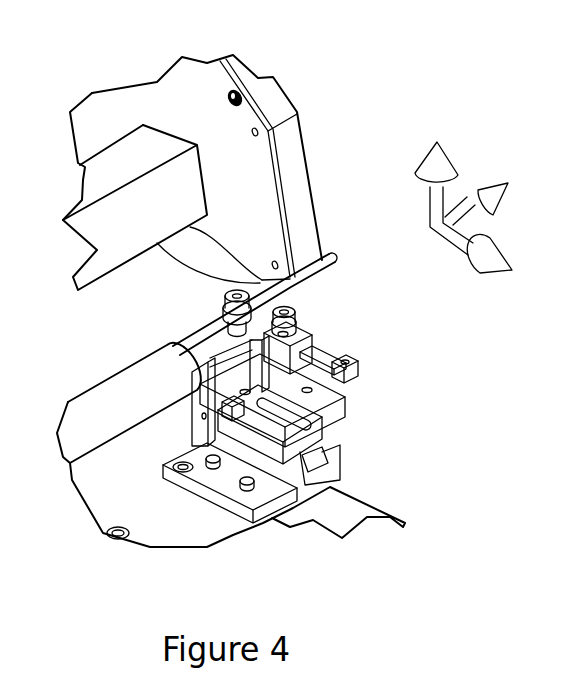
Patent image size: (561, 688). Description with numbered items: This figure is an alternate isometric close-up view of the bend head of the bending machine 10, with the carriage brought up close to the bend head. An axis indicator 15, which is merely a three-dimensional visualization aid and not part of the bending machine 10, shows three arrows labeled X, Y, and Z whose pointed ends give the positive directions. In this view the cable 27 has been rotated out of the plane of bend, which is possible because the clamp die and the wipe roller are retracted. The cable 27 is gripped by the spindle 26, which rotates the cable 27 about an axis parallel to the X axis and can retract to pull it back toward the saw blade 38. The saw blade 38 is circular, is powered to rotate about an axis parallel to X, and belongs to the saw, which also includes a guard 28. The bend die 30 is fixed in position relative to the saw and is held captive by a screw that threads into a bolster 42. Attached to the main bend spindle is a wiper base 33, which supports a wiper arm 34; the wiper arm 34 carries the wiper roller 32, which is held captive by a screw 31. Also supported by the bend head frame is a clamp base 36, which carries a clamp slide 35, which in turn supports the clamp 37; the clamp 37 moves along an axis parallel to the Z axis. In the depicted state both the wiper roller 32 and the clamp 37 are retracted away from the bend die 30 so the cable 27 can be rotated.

The bending machine 10 is at (428, 435).
The axis indicator 15 is at (445, 153).
The spindle 26 is at (100, 380).
The cable 27 is at (328, 252).
The guard 28 is at (287, 92).
The bend die 30 is at (217, 307).
The screw 31 is at (293, 310).
The wiper roller 32 is at (300, 337).
The wiper base 33 is at (327, 403).
The wiper arm 34 is at (330, 362).
The clamp slide 35 is at (285, 462).
The clamp base 36 is at (213, 487).
The clamp 37 is at (312, 350).
The saw blade 38 is at (168, 253).
The bolster 42 is at (223, 327).